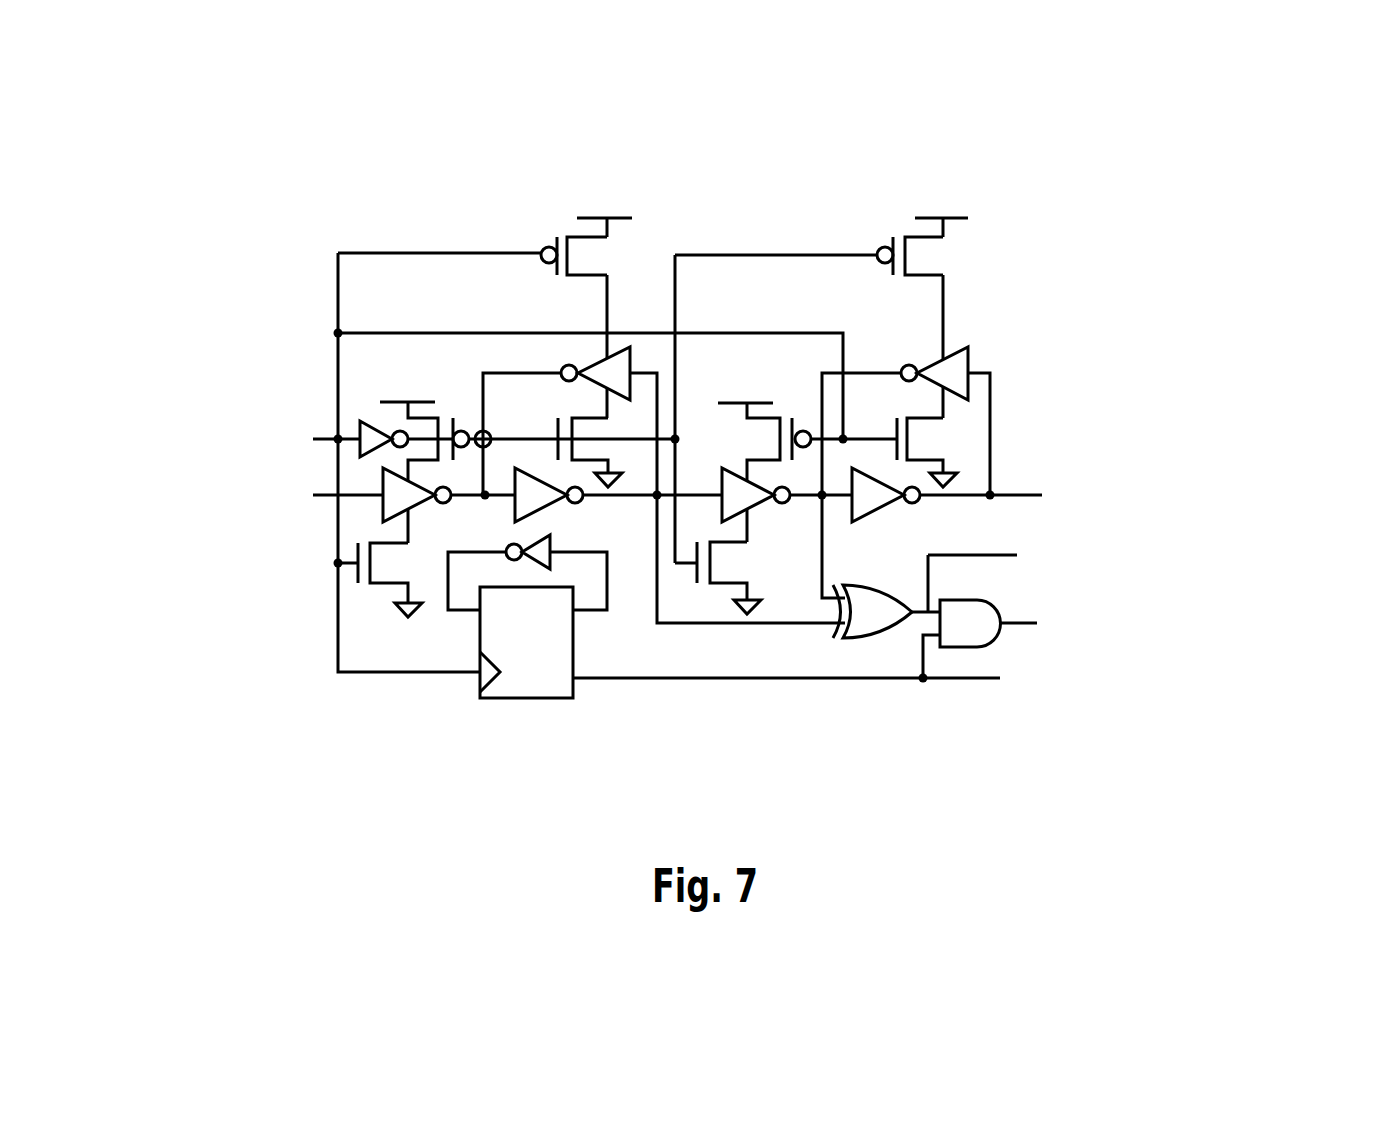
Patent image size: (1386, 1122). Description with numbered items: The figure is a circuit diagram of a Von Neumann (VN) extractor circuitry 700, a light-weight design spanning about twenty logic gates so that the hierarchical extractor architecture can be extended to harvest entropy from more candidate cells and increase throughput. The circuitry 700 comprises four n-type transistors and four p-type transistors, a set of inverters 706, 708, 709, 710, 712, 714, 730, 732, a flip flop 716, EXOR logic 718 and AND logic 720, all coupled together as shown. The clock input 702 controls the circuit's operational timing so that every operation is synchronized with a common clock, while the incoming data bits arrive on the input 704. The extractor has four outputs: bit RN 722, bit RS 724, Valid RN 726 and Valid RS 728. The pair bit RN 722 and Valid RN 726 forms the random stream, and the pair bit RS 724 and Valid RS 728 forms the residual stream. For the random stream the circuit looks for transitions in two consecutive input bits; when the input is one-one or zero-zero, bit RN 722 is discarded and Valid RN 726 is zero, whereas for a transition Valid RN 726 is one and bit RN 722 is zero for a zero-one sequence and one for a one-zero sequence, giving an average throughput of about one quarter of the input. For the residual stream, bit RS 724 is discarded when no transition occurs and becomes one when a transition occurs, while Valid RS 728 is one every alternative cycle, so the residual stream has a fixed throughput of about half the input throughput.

The VN extractor circuitry 700 is at (157, 191).
The clock input 702 is at (192, 420).
The input 704 is at (165, 497).
The inverter 706 is at (360, 415).
The inverter 708 is at (367, 513).
The inverter 709 is at (525, 538).
The inverter 710 is at (562, 508).
The inverter 712 is at (757, 515).
The inverter 714 is at (892, 508).
The flip flop 716 is at (528, 710).
The EXOR logic 718 is at (868, 642).
The AND logic 720 is at (965, 652).
The bit RN output 722 is at (1163, 488).
The bit RS output 724 is at (1172, 543).
The Valid RN output 726 is at (1180, 617).
The Valid RS output 728 is at (1185, 685).
The inverter 730 is at (987, 345).
The inverter 732 is at (645, 358).